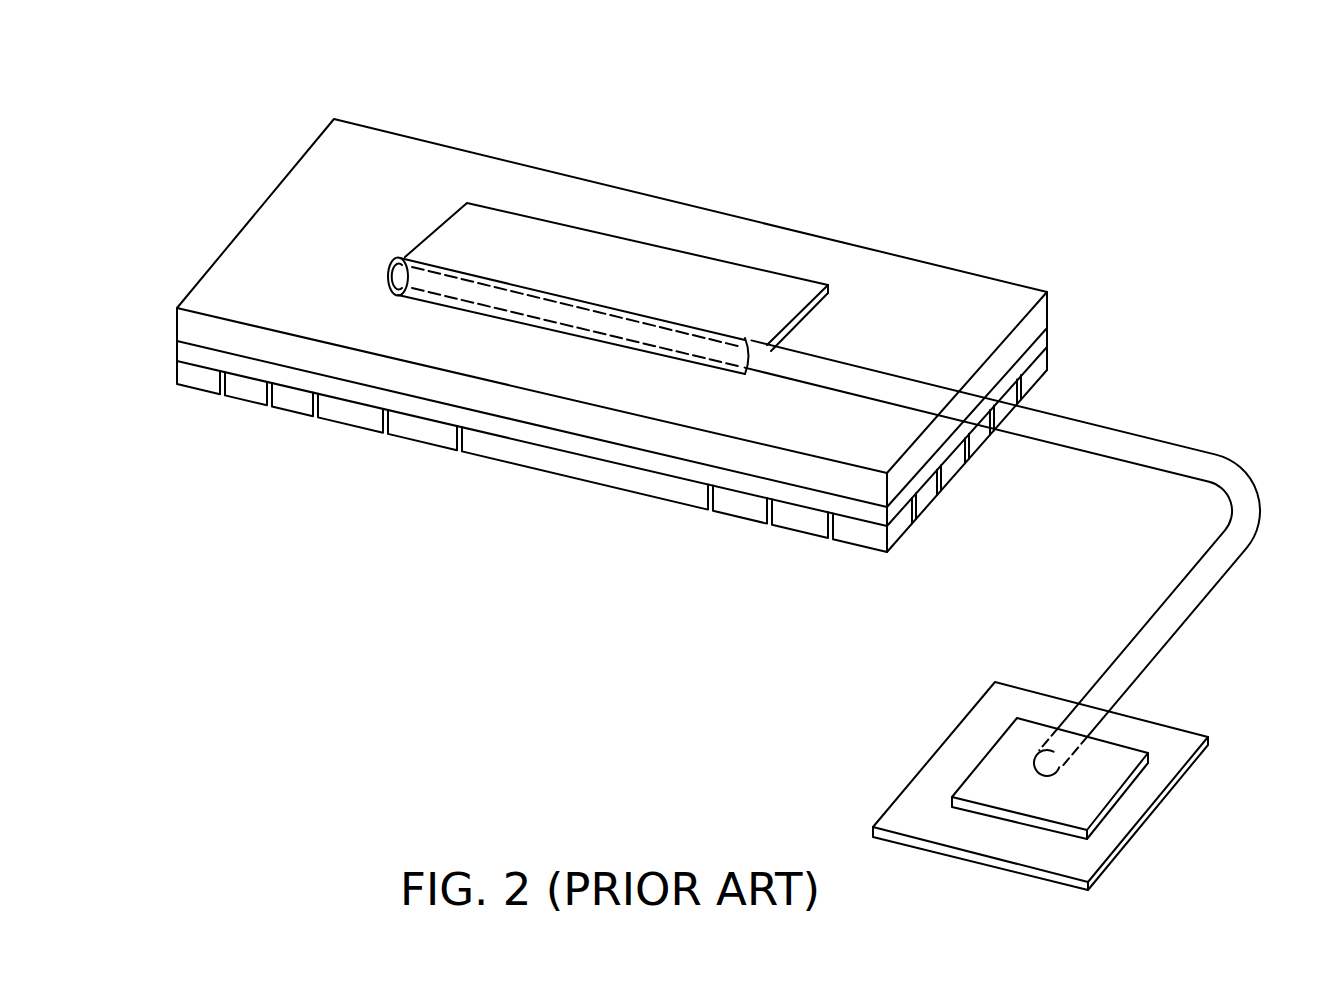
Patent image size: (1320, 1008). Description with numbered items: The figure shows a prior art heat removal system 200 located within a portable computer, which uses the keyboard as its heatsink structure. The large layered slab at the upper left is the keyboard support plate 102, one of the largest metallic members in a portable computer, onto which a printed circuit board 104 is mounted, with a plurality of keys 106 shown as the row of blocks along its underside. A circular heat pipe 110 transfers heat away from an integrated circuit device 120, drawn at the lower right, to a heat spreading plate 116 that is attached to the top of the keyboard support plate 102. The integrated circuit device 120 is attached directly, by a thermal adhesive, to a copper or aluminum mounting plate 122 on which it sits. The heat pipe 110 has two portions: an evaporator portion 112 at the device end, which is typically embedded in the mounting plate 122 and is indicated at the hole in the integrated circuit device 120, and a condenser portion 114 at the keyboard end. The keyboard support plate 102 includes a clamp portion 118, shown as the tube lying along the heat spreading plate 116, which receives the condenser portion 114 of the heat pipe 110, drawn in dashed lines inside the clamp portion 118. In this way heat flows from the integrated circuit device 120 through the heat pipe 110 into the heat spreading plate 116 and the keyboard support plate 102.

The heat removal system 200 is at (703, 133).
The keyboard support plate 102 is at (446, 165).
The printed circuit board 104 is at (1041, 340).
The keys 106 is at (1043, 360).
The heat pipe 110 is at (1174, 463).
The evaporator portion 112 is at (1050, 745).
The condenser portion 114 is at (558, 317).
The heat spreading plate 116 is at (737, 300).
The clamp portion 118 is at (513, 286).
The integrated circuit device 120 is at (1000, 775).
The mounting plate 122 is at (907, 820).